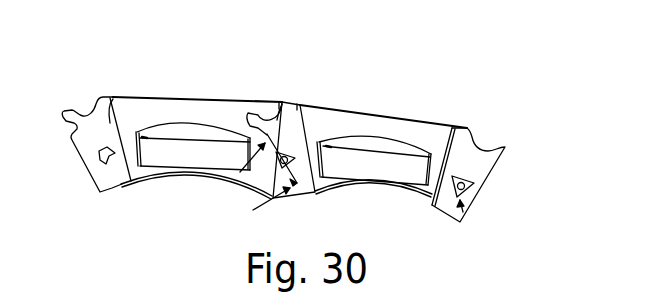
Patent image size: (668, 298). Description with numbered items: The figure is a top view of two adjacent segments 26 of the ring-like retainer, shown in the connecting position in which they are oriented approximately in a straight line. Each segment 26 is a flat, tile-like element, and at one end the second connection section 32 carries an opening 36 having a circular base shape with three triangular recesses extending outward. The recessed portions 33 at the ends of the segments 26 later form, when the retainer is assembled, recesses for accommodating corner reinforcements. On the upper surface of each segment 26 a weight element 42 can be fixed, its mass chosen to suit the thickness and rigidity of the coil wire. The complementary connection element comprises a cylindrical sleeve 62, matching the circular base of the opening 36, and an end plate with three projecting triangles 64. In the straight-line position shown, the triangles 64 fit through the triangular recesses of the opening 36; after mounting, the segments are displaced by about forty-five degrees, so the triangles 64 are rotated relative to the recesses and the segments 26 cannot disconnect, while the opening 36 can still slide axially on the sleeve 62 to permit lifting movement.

The segment 26 is at (397, 128).
The second connection section 32 is at (115, 98).
The recessed portion 33 is at (80, 117).
The opening 36 is at (108, 157).
The weight element 42 is at (345, 163).
The cylindrical sleeve 62 is at (476, 193).
The projecting triangle 64 is at (464, 222).